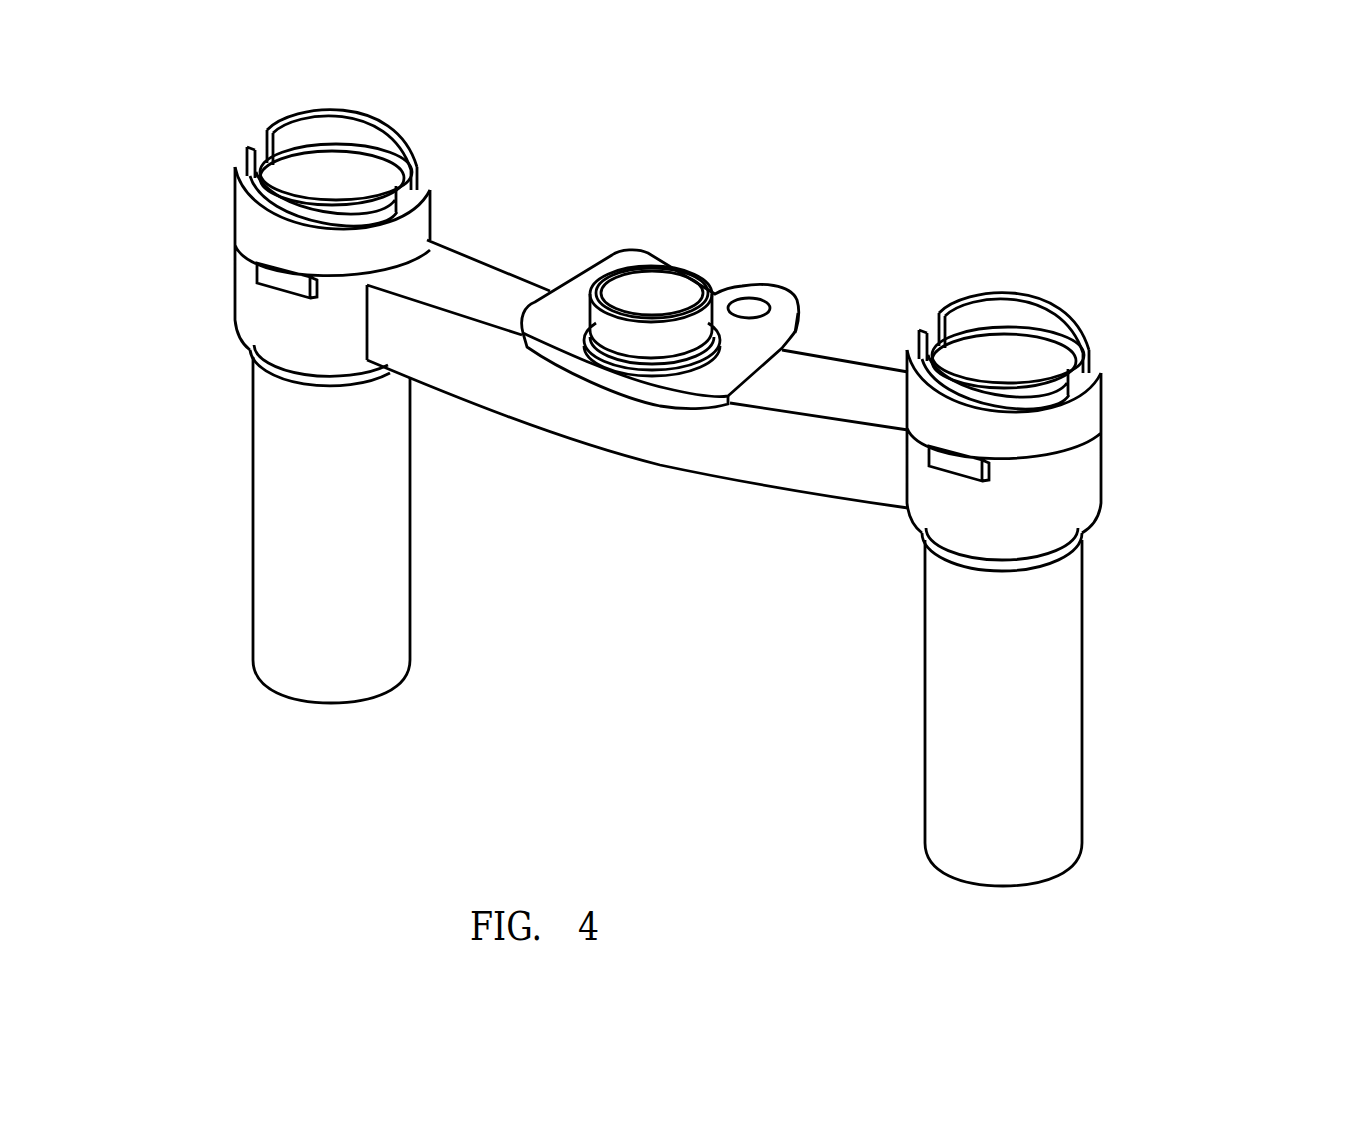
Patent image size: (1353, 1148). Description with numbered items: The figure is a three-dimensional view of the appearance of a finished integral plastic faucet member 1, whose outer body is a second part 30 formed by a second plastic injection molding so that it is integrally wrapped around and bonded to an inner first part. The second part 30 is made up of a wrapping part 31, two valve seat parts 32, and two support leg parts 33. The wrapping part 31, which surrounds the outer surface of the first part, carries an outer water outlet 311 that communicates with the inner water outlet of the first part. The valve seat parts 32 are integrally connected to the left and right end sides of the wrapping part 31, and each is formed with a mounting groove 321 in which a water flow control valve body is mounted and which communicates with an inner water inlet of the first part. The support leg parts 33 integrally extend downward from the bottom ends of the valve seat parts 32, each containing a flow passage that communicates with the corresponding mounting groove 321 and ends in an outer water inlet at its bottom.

The integral plastic faucet member 1 is at (834, 214).
The second part 30 is at (1152, 751).
The wrapping part 31 is at (780, 452).
The outer water outlet 311 is at (650, 297).
The valve seat part 32 is at (272, 332).
The mounting groove 321 is at (352, 170).
The support leg part 33 is at (373, 567).